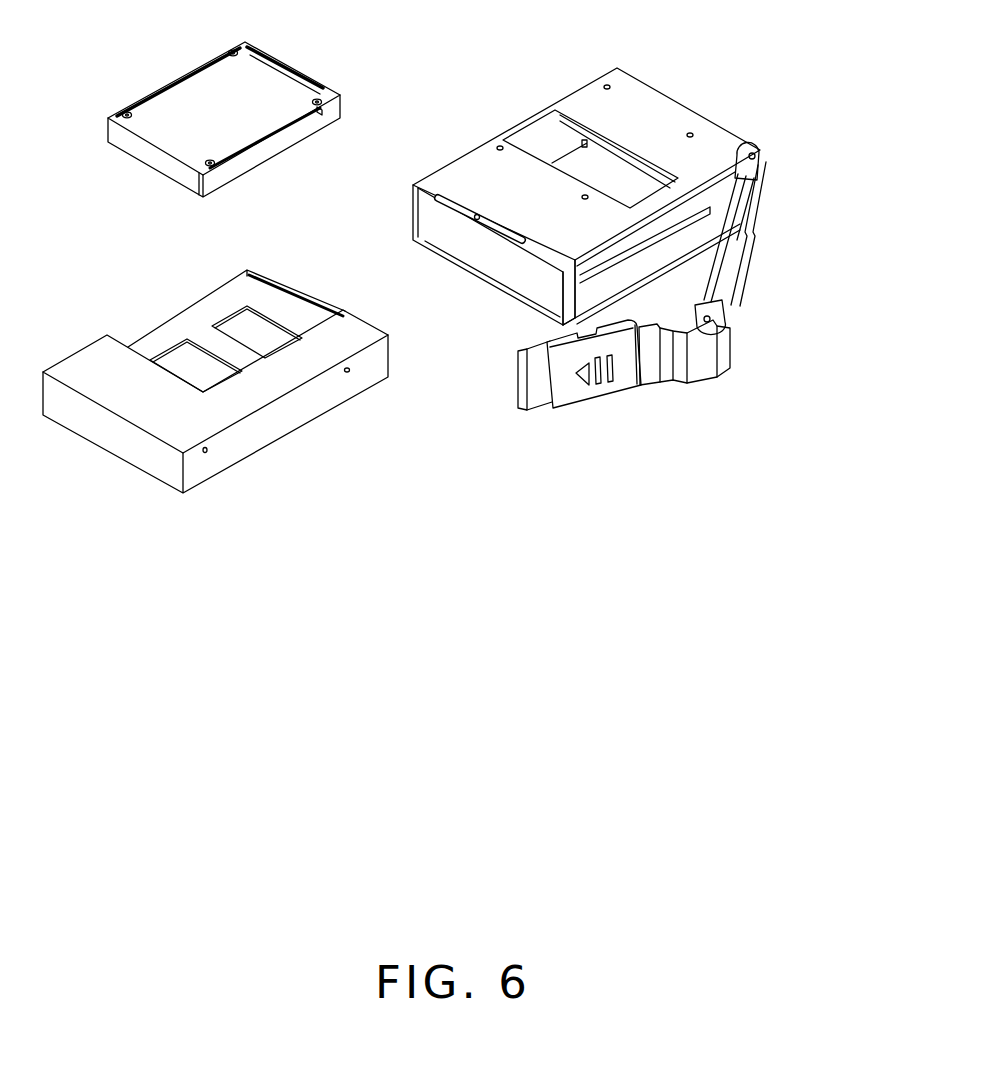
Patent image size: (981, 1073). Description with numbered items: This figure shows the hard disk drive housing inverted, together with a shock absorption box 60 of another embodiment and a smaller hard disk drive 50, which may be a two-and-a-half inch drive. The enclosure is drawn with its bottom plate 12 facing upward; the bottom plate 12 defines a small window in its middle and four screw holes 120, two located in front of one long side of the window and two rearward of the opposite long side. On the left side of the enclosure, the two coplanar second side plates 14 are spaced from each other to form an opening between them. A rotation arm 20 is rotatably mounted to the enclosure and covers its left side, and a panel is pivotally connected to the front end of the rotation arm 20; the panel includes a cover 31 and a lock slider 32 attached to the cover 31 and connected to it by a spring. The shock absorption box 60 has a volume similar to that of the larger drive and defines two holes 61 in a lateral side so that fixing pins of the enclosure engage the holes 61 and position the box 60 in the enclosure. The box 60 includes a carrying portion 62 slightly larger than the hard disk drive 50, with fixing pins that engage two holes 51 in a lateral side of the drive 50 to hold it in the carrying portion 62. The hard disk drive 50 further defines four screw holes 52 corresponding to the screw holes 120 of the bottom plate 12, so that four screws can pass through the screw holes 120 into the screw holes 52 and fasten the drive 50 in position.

The bottom plate 12 is at (673, 125).
The screw holes 120 is at (604, 83).
The second side plates 14 is at (568, 293).
The rotation arm 20 is at (737, 258).
The cover 31 is at (690, 368).
The lock slider 32 is at (573, 390).
The hard disk drive 50 is at (175, 97).
The holes 51 is at (322, 112).
The screw holes 52 is at (321, 98).
The shock absorption box 60 is at (127, 403).
The holes 61 is at (207, 451).
The carrying portion 62 is at (200, 333).